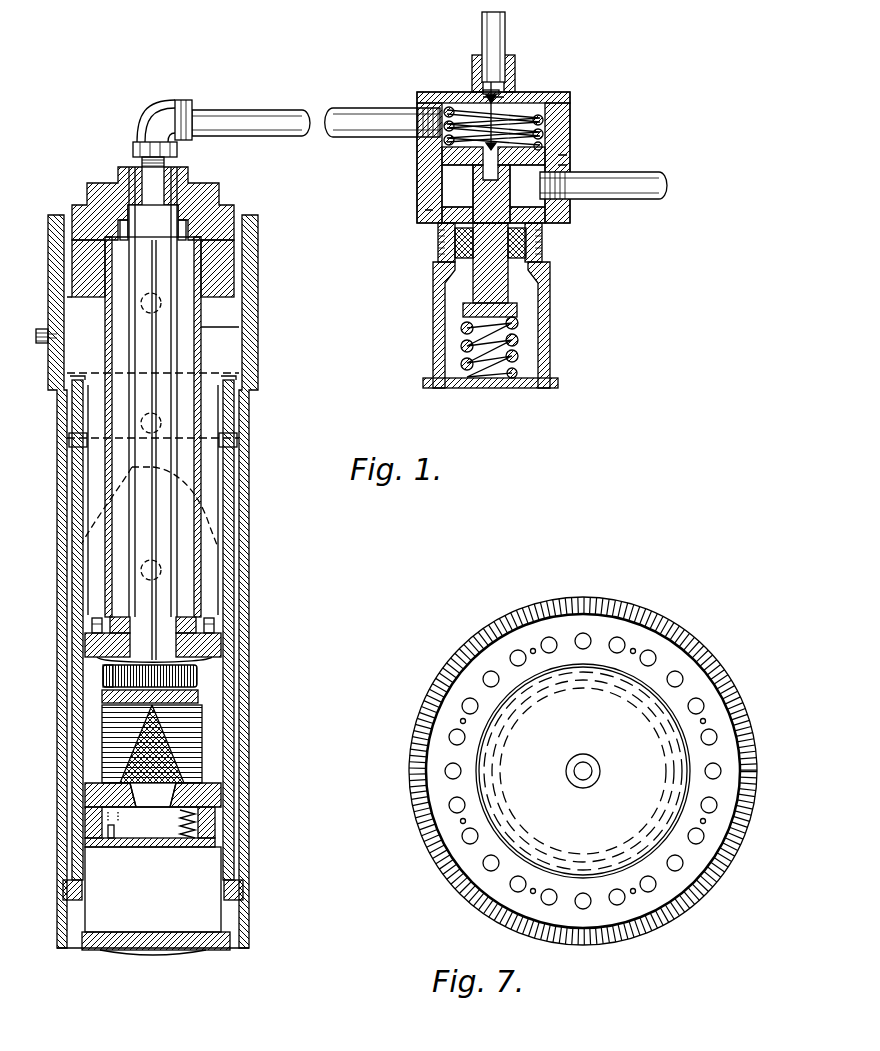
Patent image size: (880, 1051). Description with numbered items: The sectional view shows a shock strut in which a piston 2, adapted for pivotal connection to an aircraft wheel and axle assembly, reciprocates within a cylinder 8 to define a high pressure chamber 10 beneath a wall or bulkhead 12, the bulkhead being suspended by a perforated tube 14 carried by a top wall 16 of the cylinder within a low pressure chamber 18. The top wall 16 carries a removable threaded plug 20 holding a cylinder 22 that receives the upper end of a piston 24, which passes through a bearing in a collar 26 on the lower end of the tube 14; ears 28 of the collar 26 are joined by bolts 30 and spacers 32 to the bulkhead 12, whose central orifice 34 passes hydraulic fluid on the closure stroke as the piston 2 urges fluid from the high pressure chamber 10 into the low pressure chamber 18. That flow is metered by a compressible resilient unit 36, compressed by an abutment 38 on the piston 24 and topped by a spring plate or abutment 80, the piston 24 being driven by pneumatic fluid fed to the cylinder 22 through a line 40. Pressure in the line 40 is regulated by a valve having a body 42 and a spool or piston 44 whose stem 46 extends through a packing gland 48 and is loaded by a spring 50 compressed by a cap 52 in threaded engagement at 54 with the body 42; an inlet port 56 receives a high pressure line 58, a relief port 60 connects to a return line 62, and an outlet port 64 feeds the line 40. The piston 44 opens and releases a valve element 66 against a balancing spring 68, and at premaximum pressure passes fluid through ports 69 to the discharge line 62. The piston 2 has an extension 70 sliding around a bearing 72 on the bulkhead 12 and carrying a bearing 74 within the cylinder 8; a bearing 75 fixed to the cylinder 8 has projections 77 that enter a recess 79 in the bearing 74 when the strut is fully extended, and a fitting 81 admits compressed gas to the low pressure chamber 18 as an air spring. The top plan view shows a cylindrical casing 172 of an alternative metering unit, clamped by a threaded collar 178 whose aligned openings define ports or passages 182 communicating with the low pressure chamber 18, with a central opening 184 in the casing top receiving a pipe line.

In FIG. 1, the piston 2 is at (160, 952).
In FIG. 1, the cylinder 8 is at (249, 870).
In FIG. 1, the high pressure chamber 10 is at (200, 907).
In FIG. 1, the wall or bulkhead 12 is at (212, 790).
In FIG. 1, the perforated tube 14 is at (201, 322).
In FIG. 1, the top wall or bulkhead 16 is at (215, 272).
In FIG. 1, the low pressure chamber 18 is at (225, 352).
In FIG. 1, the removable threaded plug 20 is at (210, 186).
In FIG. 1, the cylinder 22 is at (215, 235).
In FIG. 1, the piston 24 is at (128, 222).
In FIG. 1, the collar 26 is at (182, 614).
In FIG. 1, the ears 28 is at (212, 648).
In FIG. 1, the bolts 30 is at (207, 628).
In FIG. 1, the spacers 32 is at (203, 678).
In FIG. 1, the central opening or orifice 34 is at (150, 802).
In FIG. 1, the compressible resilient unit 36 is at (195, 730).
In FIG. 1, the abutment 38 is at (105, 673).
In FIG. 1, the line 40 is at (268, 110).
In FIG. 1, the body 42 is at (570, 133).
In FIG. 1, the spool or piston 44 is at (430, 182).
In FIG. 1, the stem 46 is at (502, 250).
In FIG. 1, the packing gland 48 is at (442, 250).
In FIG. 1, the spring 50 is at (518, 340).
In FIG. 1, the cap 52 is at (515, 390).
In FIG. 1, the threaded engagement 54 is at (545, 285).
In FIG. 1, the inlet port 56 is at (515, 62).
In FIG. 1, the high pressure line 58 is at (505, 31).
In FIG. 1, the discharge or relief port 60 is at (512, 172).
In FIG. 1, the discharge or return line 62 is at (657, 178).
In FIG. 1, the outlet port 64 is at (432, 92).
In FIG. 1, the valve element 66 is at (500, 84).
In FIG. 1, the balancing spring 68 is at (530, 118).
In FIG. 1, the ports 69 is at (563, 160).
In FIG. 1, the extension 70 is at (215, 836).
In FIG. 7, the extension 70 is at (716, 682).
In FIG. 1, the bearing 72 is at (90, 815).
In FIG. 1, the bearing 74 is at (247, 450).
In FIG. 1, the bearing 75 is at (248, 938).
In FIG. 1, the upwardly extending projection 77 is at (80, 790).
In FIG. 1, the recess 79 is at (250, 512).
In FIG. 1, the spring plate or abutment 80 is at (110, 703).
In FIG. 1, the fitting 81 is at (60, 337).
In FIG. 7, the cylindrical housing or casing 172 is at (592, 690).
In FIG. 7, the collar 178 is at (690, 739).
In FIG. 7, the ports or passages 182 is at (549, 637).
In FIG. 7, the opening 184 is at (585, 769).